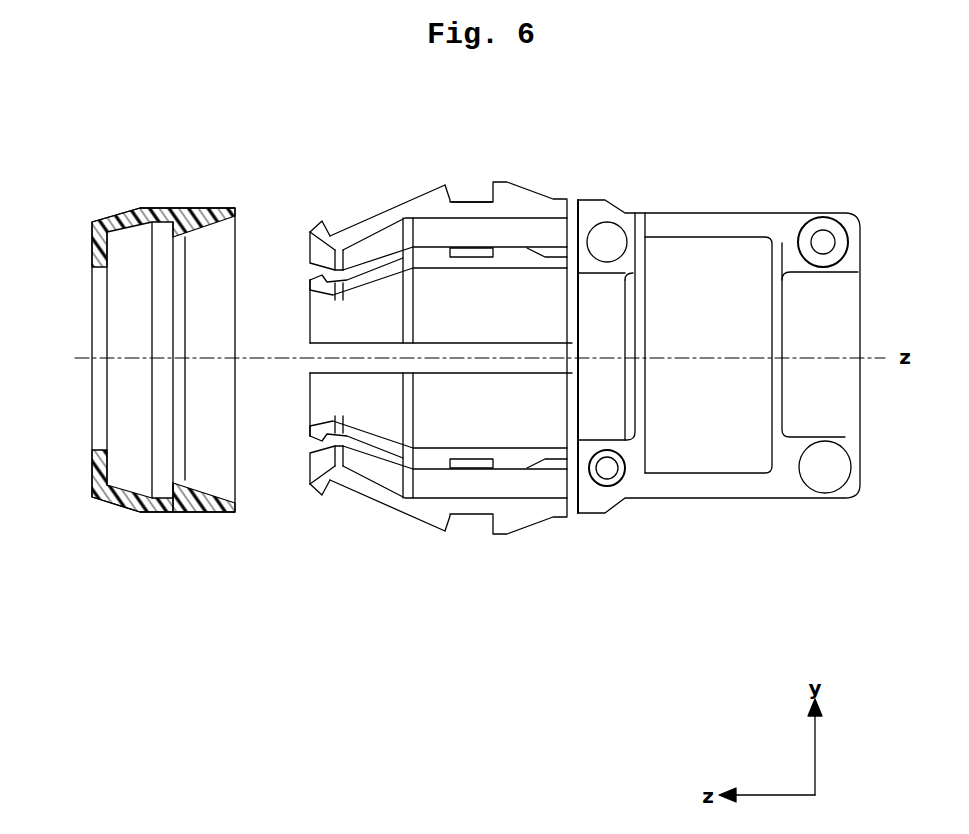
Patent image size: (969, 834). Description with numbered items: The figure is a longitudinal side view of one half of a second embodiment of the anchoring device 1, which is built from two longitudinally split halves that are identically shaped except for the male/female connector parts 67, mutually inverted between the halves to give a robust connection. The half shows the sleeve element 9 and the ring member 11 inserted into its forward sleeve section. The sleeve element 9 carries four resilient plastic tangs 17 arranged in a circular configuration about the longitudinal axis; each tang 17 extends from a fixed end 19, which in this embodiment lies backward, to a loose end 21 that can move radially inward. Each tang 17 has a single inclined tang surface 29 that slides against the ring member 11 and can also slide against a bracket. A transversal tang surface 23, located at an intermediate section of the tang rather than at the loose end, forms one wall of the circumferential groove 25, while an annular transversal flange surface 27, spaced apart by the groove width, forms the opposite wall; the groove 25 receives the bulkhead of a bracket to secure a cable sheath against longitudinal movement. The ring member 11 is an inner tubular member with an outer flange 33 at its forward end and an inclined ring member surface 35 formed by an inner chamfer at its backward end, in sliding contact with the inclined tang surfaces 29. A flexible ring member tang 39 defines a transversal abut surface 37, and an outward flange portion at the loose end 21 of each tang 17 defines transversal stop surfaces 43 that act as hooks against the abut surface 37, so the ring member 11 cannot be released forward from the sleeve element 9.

The anchoring device 1 is at (697, 103).
The sleeve element 9 is at (719, 366).
The ring member 11 is at (155, 387).
The resilient tangs 17 is at (417, 526).
The fixed end 19 is at (429, 376).
The loose end 21 is at (306, 255).
The transversal tang surface 23 is at (475, 192).
The circumferential groove 25 is at (472, 535).
The annular transversal flange surface 27 is at (488, 194).
The inclined tang surface 29 is at (432, 192).
The outer flange 33 is at (105, 470).
The inclined ring member surface 35 is at (232, 500).
The transversal abut surface 37 is at (173, 225).
The ring member tang 39 is at (320, 228).
The transversal stop surface 43 is at (340, 496).
The male/female connector parts 67 is at (608, 238).